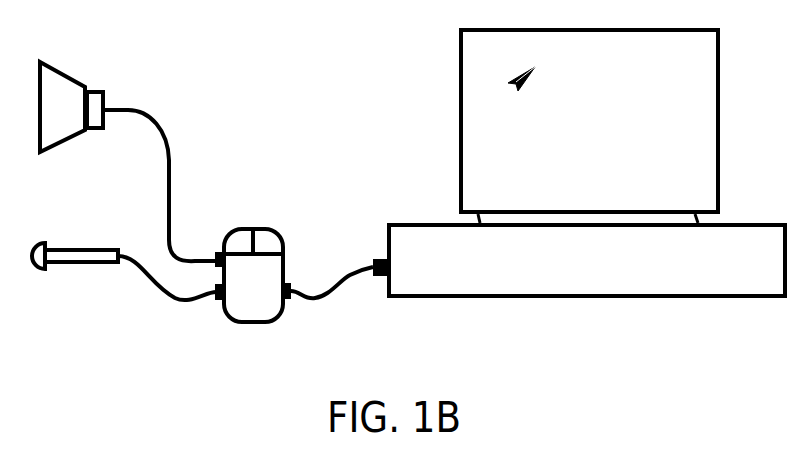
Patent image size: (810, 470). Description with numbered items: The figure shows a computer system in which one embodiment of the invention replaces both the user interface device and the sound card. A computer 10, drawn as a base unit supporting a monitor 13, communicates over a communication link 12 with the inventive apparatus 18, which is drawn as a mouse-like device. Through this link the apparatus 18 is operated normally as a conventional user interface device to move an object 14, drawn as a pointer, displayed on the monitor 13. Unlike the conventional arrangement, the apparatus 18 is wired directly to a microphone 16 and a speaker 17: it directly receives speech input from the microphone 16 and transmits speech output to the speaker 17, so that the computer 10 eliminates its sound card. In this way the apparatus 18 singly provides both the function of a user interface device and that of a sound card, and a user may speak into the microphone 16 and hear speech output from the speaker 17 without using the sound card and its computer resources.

The computer 10 is at (684, 299).
The communication link 12 is at (345, 277).
The monitor 13 is at (460, 82).
The object 14 is at (520, 90).
The microphone 16 is at (96, 249).
The speaker 17 is at (60, 63).
The apparatus 18 is at (270, 228).